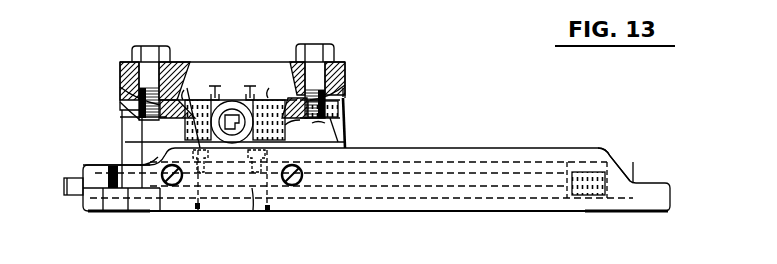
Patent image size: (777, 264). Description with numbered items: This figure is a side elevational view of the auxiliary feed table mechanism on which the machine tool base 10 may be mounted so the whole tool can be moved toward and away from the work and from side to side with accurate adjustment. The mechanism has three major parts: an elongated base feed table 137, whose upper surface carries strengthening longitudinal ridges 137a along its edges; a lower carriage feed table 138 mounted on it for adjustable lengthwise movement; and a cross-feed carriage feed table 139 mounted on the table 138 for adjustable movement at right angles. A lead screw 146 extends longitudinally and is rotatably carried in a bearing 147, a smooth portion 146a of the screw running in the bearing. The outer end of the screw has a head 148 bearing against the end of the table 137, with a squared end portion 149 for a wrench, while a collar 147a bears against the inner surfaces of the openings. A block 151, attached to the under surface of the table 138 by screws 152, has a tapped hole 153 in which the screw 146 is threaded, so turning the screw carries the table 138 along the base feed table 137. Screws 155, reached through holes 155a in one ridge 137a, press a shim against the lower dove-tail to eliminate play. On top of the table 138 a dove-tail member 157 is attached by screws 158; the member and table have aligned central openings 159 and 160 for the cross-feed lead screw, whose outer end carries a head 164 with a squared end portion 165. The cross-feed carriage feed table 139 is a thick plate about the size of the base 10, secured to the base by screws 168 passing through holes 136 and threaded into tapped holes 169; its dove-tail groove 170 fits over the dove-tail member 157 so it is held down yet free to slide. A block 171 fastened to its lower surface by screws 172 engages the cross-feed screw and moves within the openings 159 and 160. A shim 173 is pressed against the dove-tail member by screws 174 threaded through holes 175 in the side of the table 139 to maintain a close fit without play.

The base 10 is at (236, 62).
The holes 136 is at (130, 72).
The base feed table 137 is at (97, 193).
The longitudinal ridges 137a is at (537, 147).
The lower carriage feed table 138 is at (134, 125).
The cross-feed carriage feed table 139 is at (347, 92).
The lead screw 146 is at (417, 192).
The unthreaded portion of lead screw 146a is at (132, 175).
The bearing 147 is at (127, 175).
The collar 147a is at (199, 208).
The head 148 is at (86, 170).
The squared end portion 149 is at (72, 178).
The block 151 is at (257, 190).
The screws 152 is at (195, 161).
The tapped hole 153 is at (222, 194).
The screws 155 is at (183, 192).
The holes 155a is at (345, 210).
The dove-tail member 157 is at (128, 106).
The screws 158 is at (237, 93).
The central opening 159 is at (314, 122).
The central opening 160 is at (254, 90).
The head 164 is at (205, 143).
The squared end portion 165 is at (293, 134).
The screws 168 is at (151, 44).
The tapped holes 169 is at (127, 92).
The dove-tail groove 170 is at (138, 124).
The block 171 is at (210, 94).
The screws 172 is at (252, 88).
The shim 173 is at (326, 136).
The screws 174 is at (345, 108).
The holes 175 is at (338, 130).